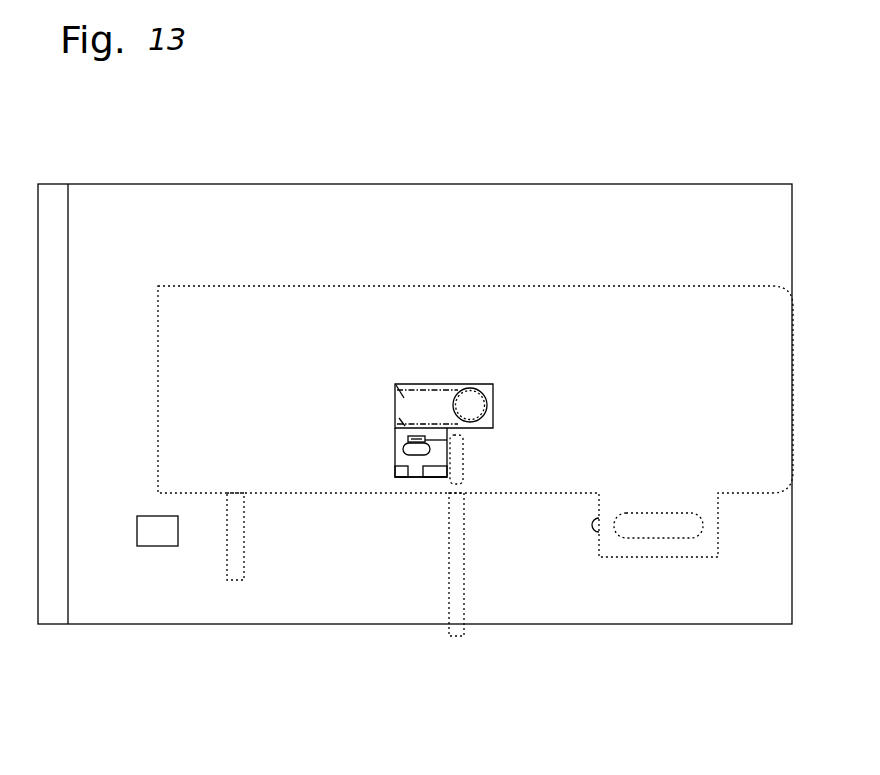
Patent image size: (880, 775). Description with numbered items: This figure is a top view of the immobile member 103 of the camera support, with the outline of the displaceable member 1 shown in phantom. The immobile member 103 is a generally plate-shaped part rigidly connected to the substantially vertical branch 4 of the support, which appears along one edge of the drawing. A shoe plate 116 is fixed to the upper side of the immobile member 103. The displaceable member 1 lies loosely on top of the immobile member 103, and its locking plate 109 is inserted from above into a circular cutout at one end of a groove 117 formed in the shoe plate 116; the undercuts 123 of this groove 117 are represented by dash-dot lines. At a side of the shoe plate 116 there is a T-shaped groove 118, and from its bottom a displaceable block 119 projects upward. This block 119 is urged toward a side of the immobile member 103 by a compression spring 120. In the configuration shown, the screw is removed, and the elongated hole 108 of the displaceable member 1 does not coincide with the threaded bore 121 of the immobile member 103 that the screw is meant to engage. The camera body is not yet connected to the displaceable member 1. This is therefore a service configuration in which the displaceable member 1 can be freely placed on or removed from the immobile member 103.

The second plate-shaped member 1 is at (695, 329).
The vertical branch 4 is at (53, 613).
The immobile member 103 is at (500, 215).
The elongated hole 108 is at (658, 532).
The locking plate 109 is at (473, 410).
The shoe plate 116 is at (492, 387).
The groove 117 is at (428, 402).
The T-shaped groove 118 is at (415, 473).
The displaceable block 119 is at (408, 452).
The compression spring 120 is at (407, 438).
The threaded bore 121 is at (588, 528).
The undercuts 123 is at (403, 422).